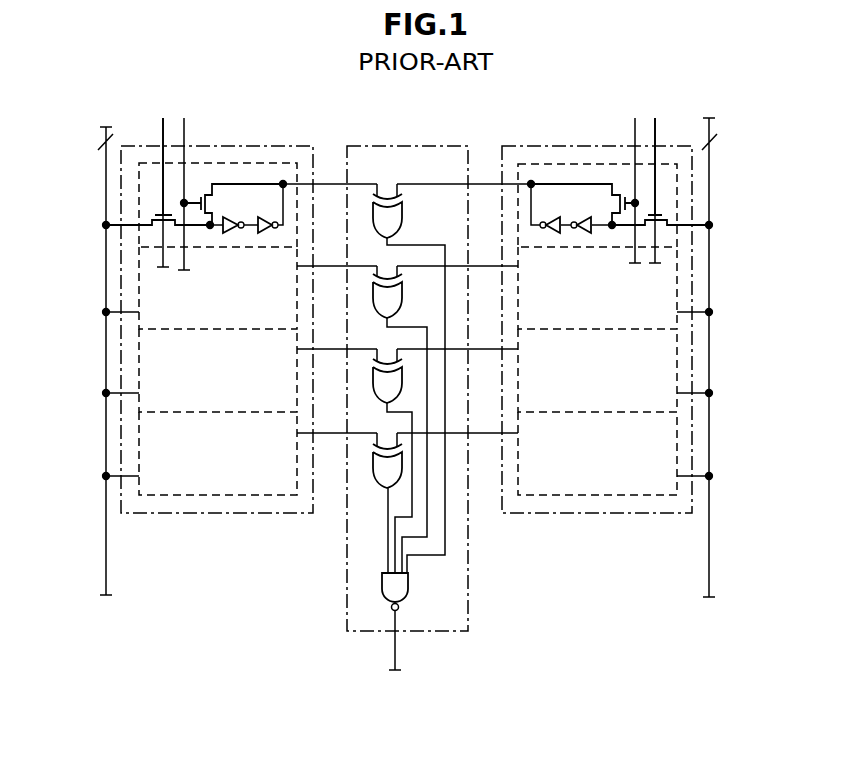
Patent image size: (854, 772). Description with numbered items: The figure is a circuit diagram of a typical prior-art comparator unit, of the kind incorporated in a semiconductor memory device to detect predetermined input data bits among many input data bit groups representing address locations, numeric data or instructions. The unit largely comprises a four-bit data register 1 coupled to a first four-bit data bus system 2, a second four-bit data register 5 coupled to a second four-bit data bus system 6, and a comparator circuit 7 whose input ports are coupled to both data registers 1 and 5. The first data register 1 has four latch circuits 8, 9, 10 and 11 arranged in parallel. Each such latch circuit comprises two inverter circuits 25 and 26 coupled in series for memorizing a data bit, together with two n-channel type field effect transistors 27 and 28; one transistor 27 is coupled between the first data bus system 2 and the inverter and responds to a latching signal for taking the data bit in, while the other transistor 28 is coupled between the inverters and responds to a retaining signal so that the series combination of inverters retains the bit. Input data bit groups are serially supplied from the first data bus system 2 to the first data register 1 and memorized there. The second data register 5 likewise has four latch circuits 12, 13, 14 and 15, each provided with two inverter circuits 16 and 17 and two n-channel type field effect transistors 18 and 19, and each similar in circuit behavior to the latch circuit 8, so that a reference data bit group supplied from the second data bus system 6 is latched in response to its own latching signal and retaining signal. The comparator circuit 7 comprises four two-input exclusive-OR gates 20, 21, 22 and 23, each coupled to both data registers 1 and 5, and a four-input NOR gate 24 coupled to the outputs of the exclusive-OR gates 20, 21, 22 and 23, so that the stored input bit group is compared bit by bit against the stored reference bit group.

The four-bit data register 1 is at (292, 146).
The first four-bit data bus system 2 is at (107, 455).
The second four-bit data register 5 is at (550, 146).
The second four-bit data bus system 6 is at (709, 552).
The comparator circuit 7 is at (404, 146).
The latch circuit 8 is at (253, 162).
The latch circuit 9 is at (280, 303).
The latch circuit 10 is at (286, 405).
The latch circuit 11 is at (284, 493).
The latch circuit 12 is at (571, 163).
The latch circuit 13 is at (660, 318).
The latch circuit 14 is at (660, 401).
The latch circuit 15 is at (660, 485).
The inverter circuit 16 is at (579, 218).
The inverter circuit 17 is at (548, 218).
The n-channel type field effect transistor 18 is at (656, 211).
The n-channel type field effect transistor 19 is at (621, 200).
The two-input exclusive-OR gate 20 is at (400, 208).
The two-input exclusive-OR gate 21 is at (401, 289).
The two-input exclusive-OR gate 22 is at (374, 388).
The two-input exclusive-OR gate 23 is at (376, 487).
The four-input NOR gate 24 is at (406, 591).
The inverter circuit 25 is at (234, 218).
The inverter circuit 26 is at (268, 218).
The n-channel type field effect transistor 27 is at (159, 212).
The n-channel type field effect transistor 28 is at (200, 203).